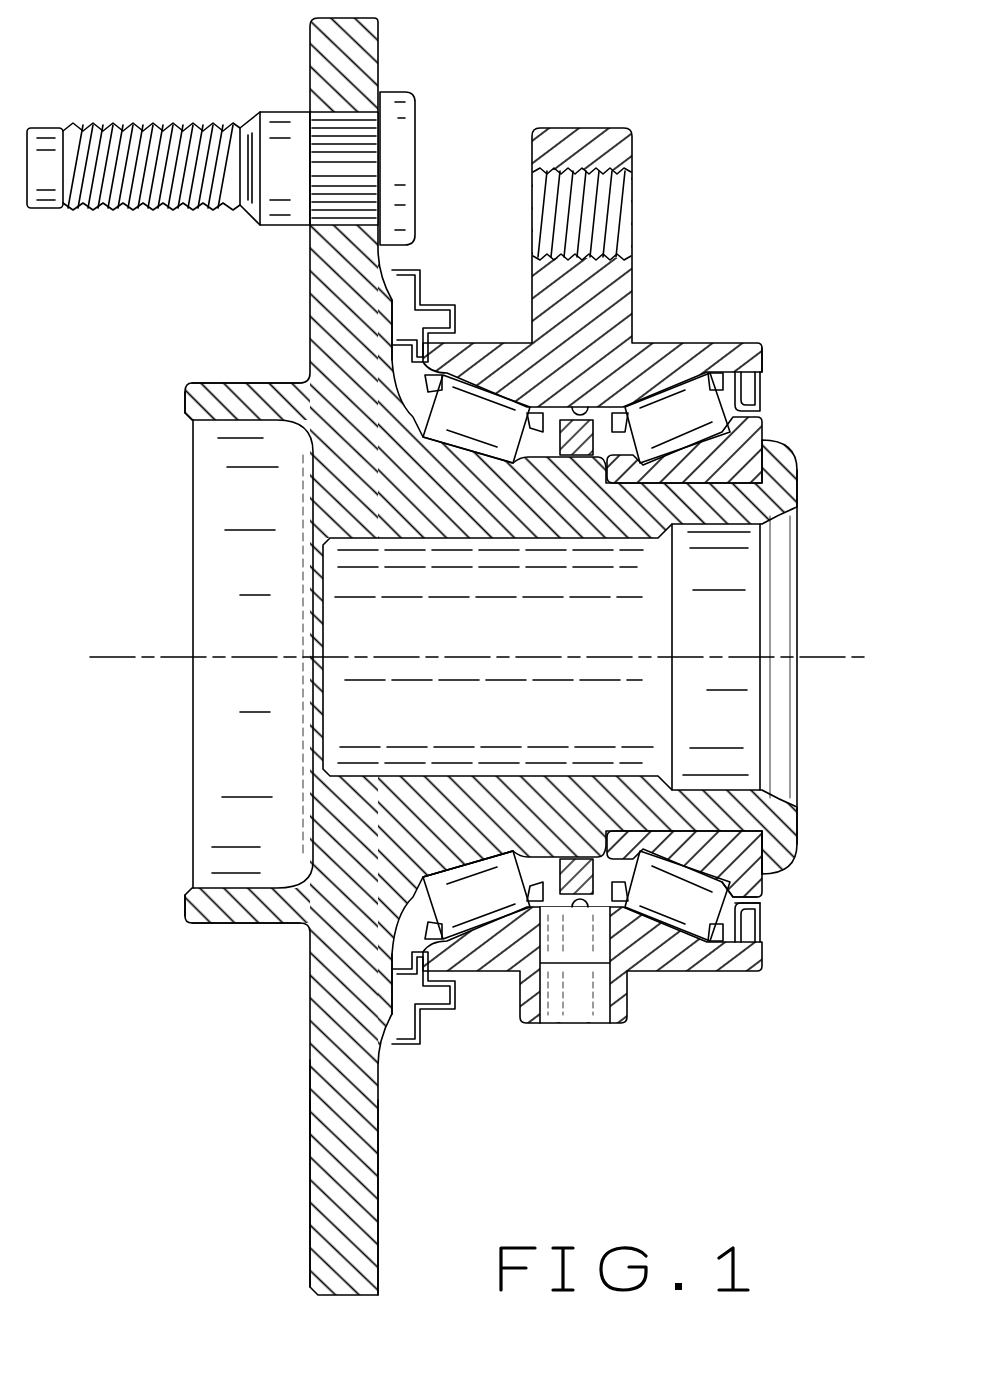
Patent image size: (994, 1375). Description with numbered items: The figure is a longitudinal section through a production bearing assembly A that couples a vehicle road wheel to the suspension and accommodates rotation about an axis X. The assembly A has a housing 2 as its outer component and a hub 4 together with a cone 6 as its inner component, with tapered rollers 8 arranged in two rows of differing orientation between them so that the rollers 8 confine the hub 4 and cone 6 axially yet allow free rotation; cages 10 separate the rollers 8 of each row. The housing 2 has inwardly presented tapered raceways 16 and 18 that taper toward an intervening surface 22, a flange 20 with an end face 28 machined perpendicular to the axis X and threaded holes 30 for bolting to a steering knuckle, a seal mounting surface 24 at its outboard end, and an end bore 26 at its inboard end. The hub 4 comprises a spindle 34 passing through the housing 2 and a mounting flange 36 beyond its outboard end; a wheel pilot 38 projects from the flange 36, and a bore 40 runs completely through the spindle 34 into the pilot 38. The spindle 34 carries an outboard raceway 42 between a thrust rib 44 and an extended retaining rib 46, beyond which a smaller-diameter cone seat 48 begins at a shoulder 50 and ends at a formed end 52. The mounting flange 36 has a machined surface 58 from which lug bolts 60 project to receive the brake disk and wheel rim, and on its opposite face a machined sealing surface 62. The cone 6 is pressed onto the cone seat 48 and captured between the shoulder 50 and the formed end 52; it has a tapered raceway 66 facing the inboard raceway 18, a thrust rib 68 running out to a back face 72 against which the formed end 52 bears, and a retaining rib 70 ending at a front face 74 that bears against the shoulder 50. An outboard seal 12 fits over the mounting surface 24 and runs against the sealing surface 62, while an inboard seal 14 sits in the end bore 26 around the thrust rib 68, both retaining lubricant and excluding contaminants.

The housing 2 is at (747, 333).
The hub 4 is at (303, 302).
The cone 6 is at (772, 426).
The tapered rollers 8 is at (480, 410).
The cages 10 is at (400, 357).
The outboard seal 12 is at (428, 290).
The inboard seal 14 is at (767, 388).
The outboard raceway 16 is at (493, 905).
The inboard raceway 18 is at (663, 900).
The flange 20 is at (587, 143).
The intervening surface 22 is at (610, 407).
The seal mounting surface 24 is at (467, 987).
The end bore 26 is at (763, 933).
The end face 28 is at (633, 143).
The threaded holes 30 is at (603, 208).
The spindle 34 is at (619, 522).
The mounting flange 36 is at (318, 1180).
The wheel pilot 38 is at (240, 395).
The bore 40 is at (380, 535).
The outboard raceway 42 is at (427, 880).
The thrust rib 44 is at (427, 893).
The retaining rib 46 is at (584, 1024).
The cone seat 48 is at (765, 833).
The shoulder 50 is at (683, 830).
The formed end 52 is at (790, 473).
The machined surface 58 is at (305, 1098).
The lug bolts 60 is at (158, 128).
The sealing surface 62 is at (400, 955).
The tapered raceway 66 is at (742, 973).
The thrust rib 68 is at (742, 887).
The retaining rib 70 is at (626, 915).
The back face 72 is at (762, 892).
The front face 74 is at (578, 858).
The production bearing assembly A is at (658, 104).
The axis X is at (461, 658).